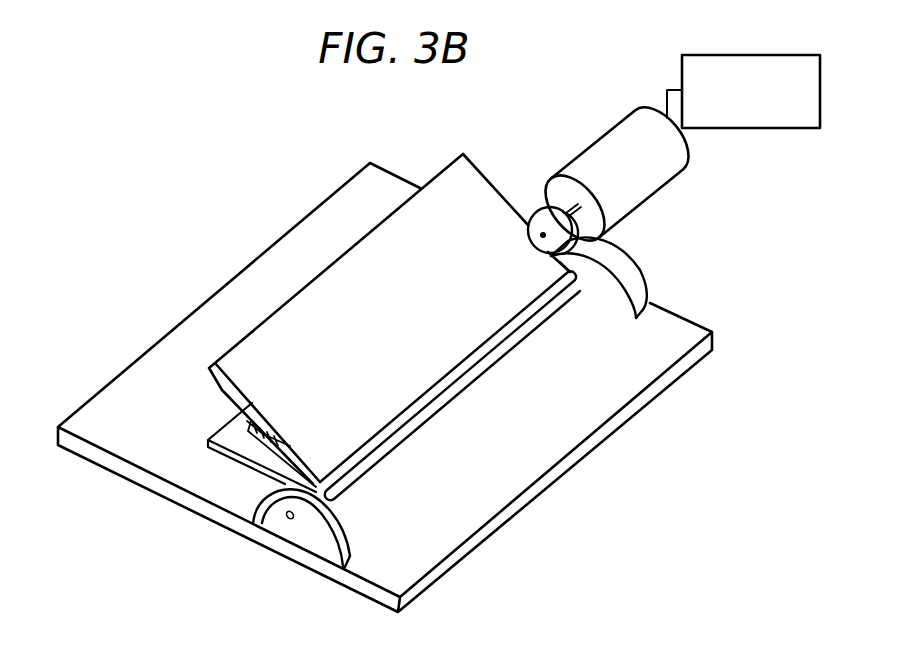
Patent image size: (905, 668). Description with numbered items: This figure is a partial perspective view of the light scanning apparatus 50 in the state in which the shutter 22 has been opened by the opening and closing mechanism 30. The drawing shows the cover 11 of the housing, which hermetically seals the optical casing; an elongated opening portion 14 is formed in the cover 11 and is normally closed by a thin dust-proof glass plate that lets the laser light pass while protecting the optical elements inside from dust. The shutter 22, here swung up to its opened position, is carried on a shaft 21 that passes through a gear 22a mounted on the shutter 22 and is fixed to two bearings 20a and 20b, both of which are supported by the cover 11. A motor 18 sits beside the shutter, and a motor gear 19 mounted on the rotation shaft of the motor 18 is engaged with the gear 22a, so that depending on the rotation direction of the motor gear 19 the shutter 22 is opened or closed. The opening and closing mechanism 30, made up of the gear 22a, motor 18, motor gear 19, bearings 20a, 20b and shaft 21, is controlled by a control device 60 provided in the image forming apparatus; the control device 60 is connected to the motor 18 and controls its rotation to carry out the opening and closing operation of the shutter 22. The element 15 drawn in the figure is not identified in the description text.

The cover 11 is at (287, 247).
The opening portion 14 is at (258, 428).
The support plate 15 is at (233, 457).
The motor 18 is at (587, 170).
The motor gear 19 is at (535, 226).
The bearing 20a is at (615, 265).
The bearing 20b is at (278, 525).
The shaft 21 is at (488, 347).
The shutter 22 is at (410, 218).
The gear 22a is at (592, 270).
The opening and closing mechanism 30 is at (635, 102).
The light scanning apparatus 50 is at (704, 291).
The control device 60 is at (747, 55).